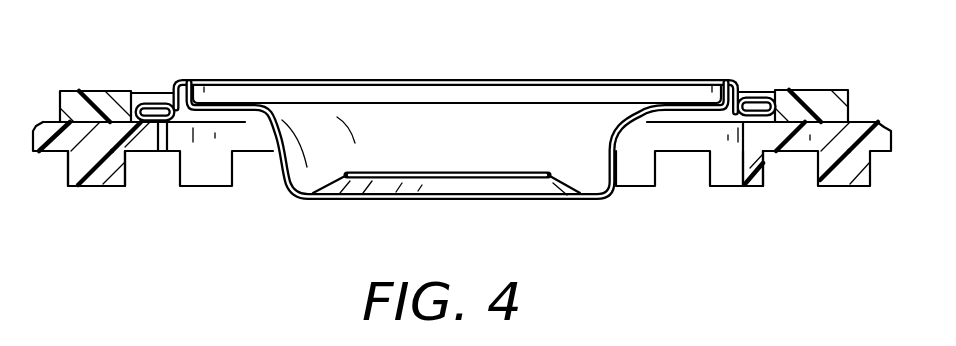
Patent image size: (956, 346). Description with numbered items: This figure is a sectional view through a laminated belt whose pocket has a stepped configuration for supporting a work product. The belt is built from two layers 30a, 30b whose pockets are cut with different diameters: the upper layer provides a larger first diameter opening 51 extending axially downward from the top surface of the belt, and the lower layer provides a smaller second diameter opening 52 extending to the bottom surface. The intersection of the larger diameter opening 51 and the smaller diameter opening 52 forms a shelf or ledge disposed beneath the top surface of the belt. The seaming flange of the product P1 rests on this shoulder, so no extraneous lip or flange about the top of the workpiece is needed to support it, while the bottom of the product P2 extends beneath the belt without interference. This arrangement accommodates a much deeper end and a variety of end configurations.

The belt layer 30a is at (100, 98).
The belt layer 30b is at (102, 173).
The seaming flange of the product P1 is at (153, 118).
The bottom of the product P2 is at (487, 188).
The first diameter opening 51 is at (769, 92).
The second diameter opening 52 is at (746, 162).